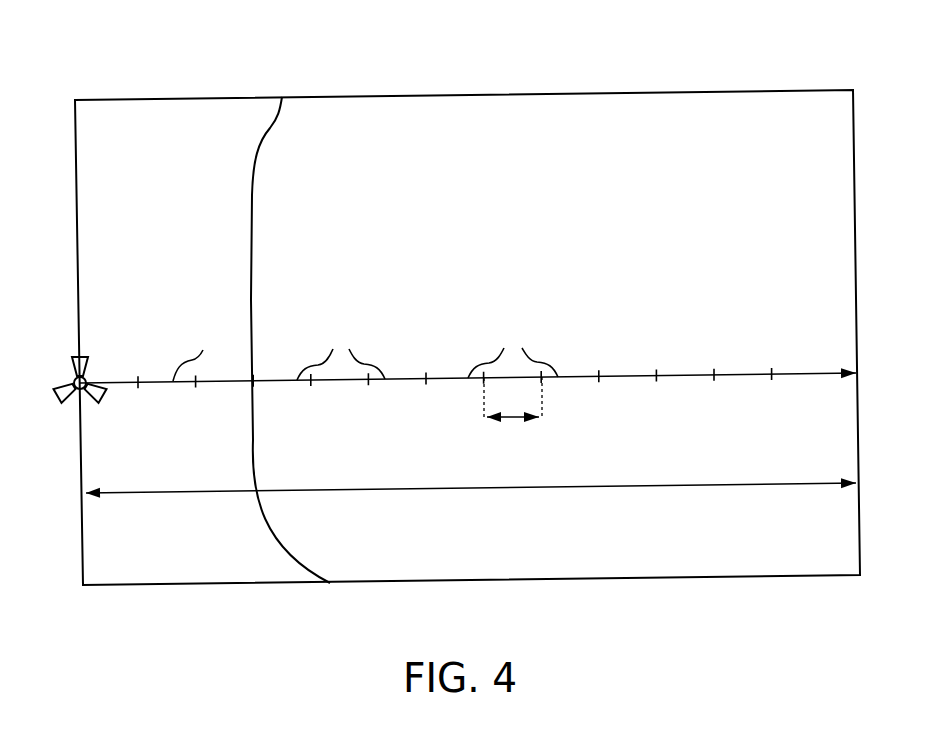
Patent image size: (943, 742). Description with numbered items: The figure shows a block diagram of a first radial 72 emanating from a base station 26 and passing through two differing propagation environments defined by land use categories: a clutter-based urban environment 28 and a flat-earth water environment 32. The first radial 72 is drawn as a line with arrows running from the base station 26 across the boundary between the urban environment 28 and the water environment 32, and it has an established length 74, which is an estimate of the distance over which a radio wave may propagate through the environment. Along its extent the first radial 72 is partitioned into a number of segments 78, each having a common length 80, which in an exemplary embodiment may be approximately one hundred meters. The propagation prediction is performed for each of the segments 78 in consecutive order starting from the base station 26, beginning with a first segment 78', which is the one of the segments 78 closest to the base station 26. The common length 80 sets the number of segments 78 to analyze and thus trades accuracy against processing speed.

The base station 26 is at (72, 382).
The urban environment 28 is at (103, 118).
The water environment 32 is at (442, 115).
The first radial 72 is at (818, 375).
The length 74 is at (650, 486).
The segments 78 is at (365, 350).
The first segment 78' is at (125, 351).
The common length 80 is at (519, 420).